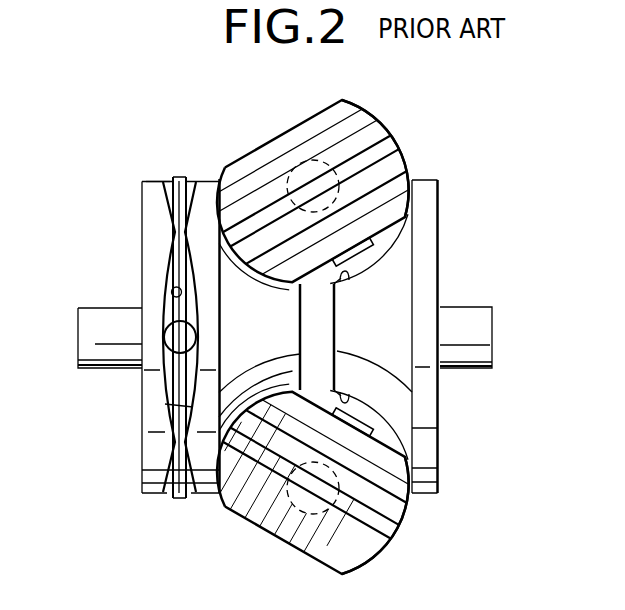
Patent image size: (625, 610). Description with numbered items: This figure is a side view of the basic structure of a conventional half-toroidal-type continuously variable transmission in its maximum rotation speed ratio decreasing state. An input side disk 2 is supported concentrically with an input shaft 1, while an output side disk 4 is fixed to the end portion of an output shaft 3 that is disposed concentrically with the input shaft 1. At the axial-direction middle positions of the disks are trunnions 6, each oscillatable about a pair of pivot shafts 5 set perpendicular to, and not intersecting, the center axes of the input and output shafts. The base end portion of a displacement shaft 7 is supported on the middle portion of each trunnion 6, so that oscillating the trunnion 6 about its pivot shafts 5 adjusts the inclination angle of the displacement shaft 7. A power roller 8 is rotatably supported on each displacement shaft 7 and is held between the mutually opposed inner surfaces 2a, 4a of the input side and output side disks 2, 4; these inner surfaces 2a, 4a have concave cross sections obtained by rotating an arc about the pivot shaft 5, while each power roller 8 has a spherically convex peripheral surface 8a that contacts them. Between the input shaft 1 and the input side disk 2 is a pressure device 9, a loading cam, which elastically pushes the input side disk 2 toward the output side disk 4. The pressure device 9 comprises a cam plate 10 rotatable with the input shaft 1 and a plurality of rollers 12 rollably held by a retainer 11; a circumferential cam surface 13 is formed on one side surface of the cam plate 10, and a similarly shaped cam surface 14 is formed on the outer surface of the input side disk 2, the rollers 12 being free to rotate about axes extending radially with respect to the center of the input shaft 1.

The input shaft 1 is at (85, 348).
The input side disk 2 is at (206, 220).
The inner surface of input side disk 2a is at (241, 503).
The output shaft 3 is at (482, 330).
The output side disk 4 is at (427, 263).
The inner surface of output side disk 4a is at (348, 280).
The pivot shaft 5 is at (282, 133).
The trunnion 6 is at (370, 123).
The displacement shaft 7 is at (362, 250).
The power roller 8 is at (412, 190).
The peripheral surface of power roller 8a is at (392, 211).
The pressure device 9 is at (157, 170).
The cam plate 10 is at (165, 232).
The retainer 11 is at (181, 177).
The roller 12 is at (191, 183).
The cam surface 13 is at (171, 292).
The cam surface 14 is at (193, 407).